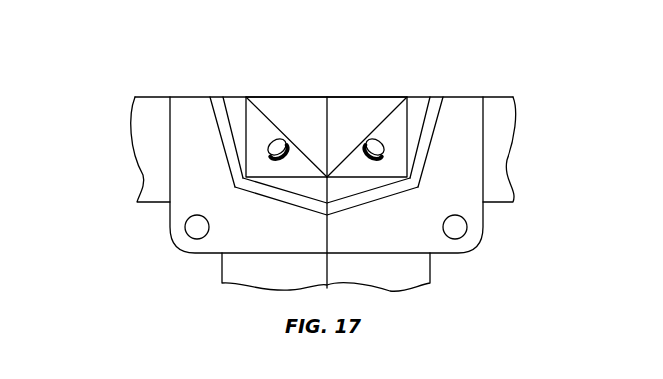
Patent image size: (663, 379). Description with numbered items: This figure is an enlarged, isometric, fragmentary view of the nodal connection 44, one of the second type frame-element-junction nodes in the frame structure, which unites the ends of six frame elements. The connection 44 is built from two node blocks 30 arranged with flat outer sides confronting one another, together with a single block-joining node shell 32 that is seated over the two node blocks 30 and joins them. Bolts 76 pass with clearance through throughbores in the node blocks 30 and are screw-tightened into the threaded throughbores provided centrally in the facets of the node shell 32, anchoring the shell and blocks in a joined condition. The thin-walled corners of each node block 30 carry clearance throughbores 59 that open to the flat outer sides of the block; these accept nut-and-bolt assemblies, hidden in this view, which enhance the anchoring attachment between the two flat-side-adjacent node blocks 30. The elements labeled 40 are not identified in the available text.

The nodal connection 44 is at (99, 126).
The node block 30 is at (197, 108).
The node shell 32 is at (449, 106).
The bolt 76 is at (282, 147).
The clearance throughbore 59 is at (196, 234).
The tab 40 is at (157, 193).